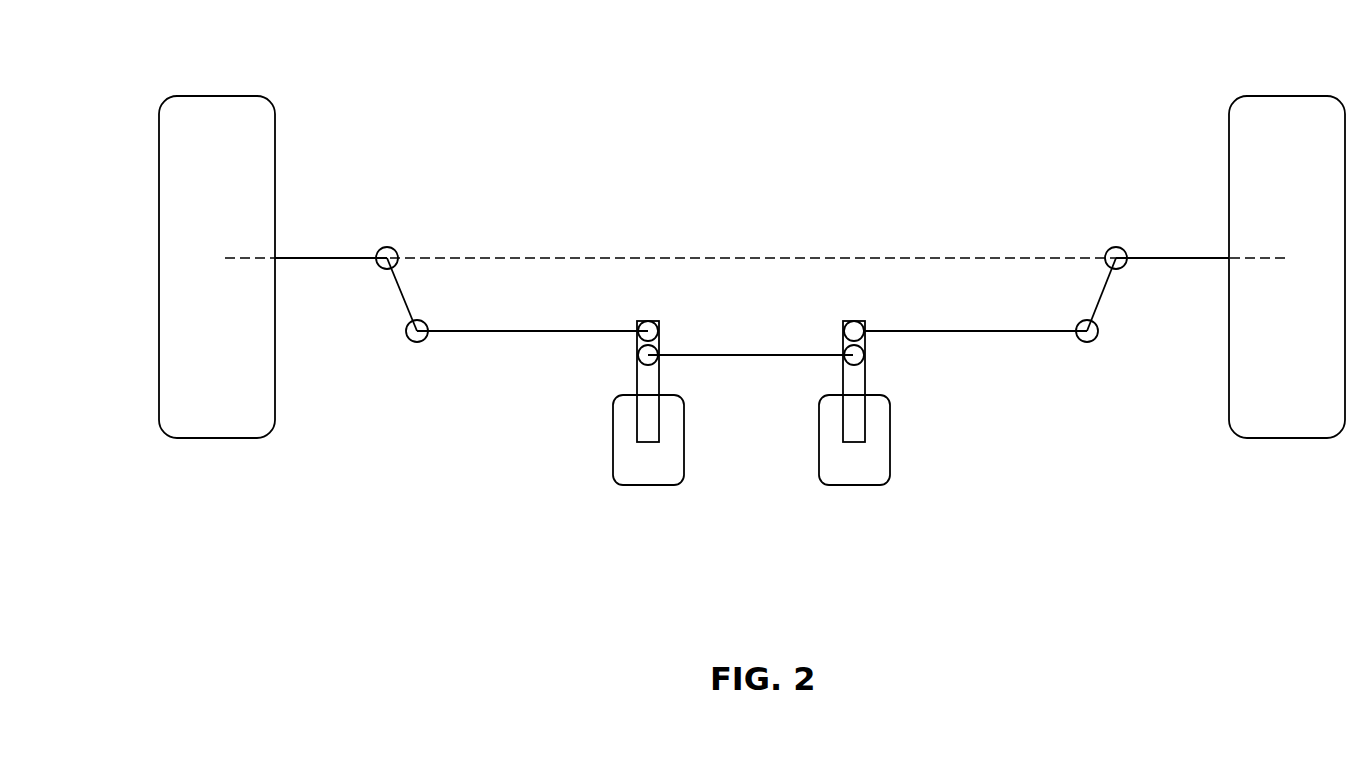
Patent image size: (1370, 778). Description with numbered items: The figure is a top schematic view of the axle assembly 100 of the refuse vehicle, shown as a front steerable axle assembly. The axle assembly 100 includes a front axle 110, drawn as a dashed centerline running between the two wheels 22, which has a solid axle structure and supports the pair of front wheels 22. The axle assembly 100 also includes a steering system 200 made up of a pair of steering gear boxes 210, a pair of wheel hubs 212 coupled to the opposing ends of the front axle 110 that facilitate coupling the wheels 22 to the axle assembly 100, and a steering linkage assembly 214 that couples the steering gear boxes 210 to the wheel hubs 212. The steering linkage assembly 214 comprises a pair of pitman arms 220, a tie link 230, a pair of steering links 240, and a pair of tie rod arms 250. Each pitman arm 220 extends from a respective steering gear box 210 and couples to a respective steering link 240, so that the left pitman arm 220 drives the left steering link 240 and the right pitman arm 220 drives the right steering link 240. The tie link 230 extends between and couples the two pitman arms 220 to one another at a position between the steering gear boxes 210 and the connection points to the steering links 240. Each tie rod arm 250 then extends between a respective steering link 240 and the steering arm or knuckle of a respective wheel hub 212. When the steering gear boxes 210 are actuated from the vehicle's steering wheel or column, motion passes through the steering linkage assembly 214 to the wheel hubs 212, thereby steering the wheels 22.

The axle assembly 100 is at (354, 35).
The wheels 22 is at (198, 110).
The front axle 110 is at (793, 257).
The steering system 200 is at (490, 500).
The steering gear boxes 210 is at (648, 487).
The wheel hubs 212 is at (330, 256).
The steering linkage assembly 214 is at (455, 357).
The pitman arms 220 is at (638, 380).
The tie link 230 is at (752, 360).
The steering links 240 is at (600, 330).
The tie rod arms 250 is at (408, 303).